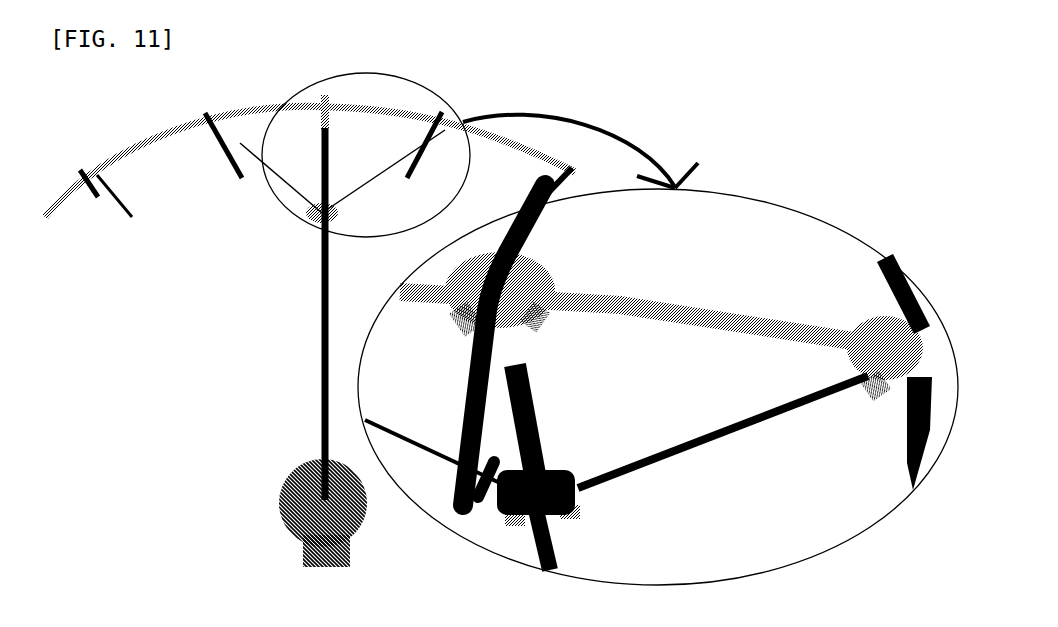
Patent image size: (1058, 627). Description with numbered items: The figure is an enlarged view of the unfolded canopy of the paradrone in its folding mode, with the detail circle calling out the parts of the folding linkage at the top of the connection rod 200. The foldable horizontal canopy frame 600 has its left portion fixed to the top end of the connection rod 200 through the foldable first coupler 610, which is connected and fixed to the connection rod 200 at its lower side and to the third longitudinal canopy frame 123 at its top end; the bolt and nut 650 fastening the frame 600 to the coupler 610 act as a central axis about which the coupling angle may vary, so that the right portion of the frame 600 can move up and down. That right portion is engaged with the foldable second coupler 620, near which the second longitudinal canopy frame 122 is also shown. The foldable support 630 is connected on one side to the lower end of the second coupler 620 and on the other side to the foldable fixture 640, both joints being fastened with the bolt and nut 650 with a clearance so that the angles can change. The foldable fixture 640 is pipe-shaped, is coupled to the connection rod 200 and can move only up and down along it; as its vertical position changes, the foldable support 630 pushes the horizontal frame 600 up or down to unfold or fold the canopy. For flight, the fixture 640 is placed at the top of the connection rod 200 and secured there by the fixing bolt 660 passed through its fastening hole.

The second longitudinal canopy frame 122 is at (880, 285).
The third longitudinal canopy frame 123 is at (523, 222).
The connection rod 200 is at (527, 388).
The foldable horizontal canopy frame 600 is at (660, 300).
The foldable first coupler 610 is at (545, 318).
The foldable second coupler 620 is at (860, 364).
The foldable support 630 is at (728, 478).
The foldable fixture 640 is at (578, 492).
The bolt and nut 650 is at (480, 338).
The fixing bolt 660 is at (545, 520).